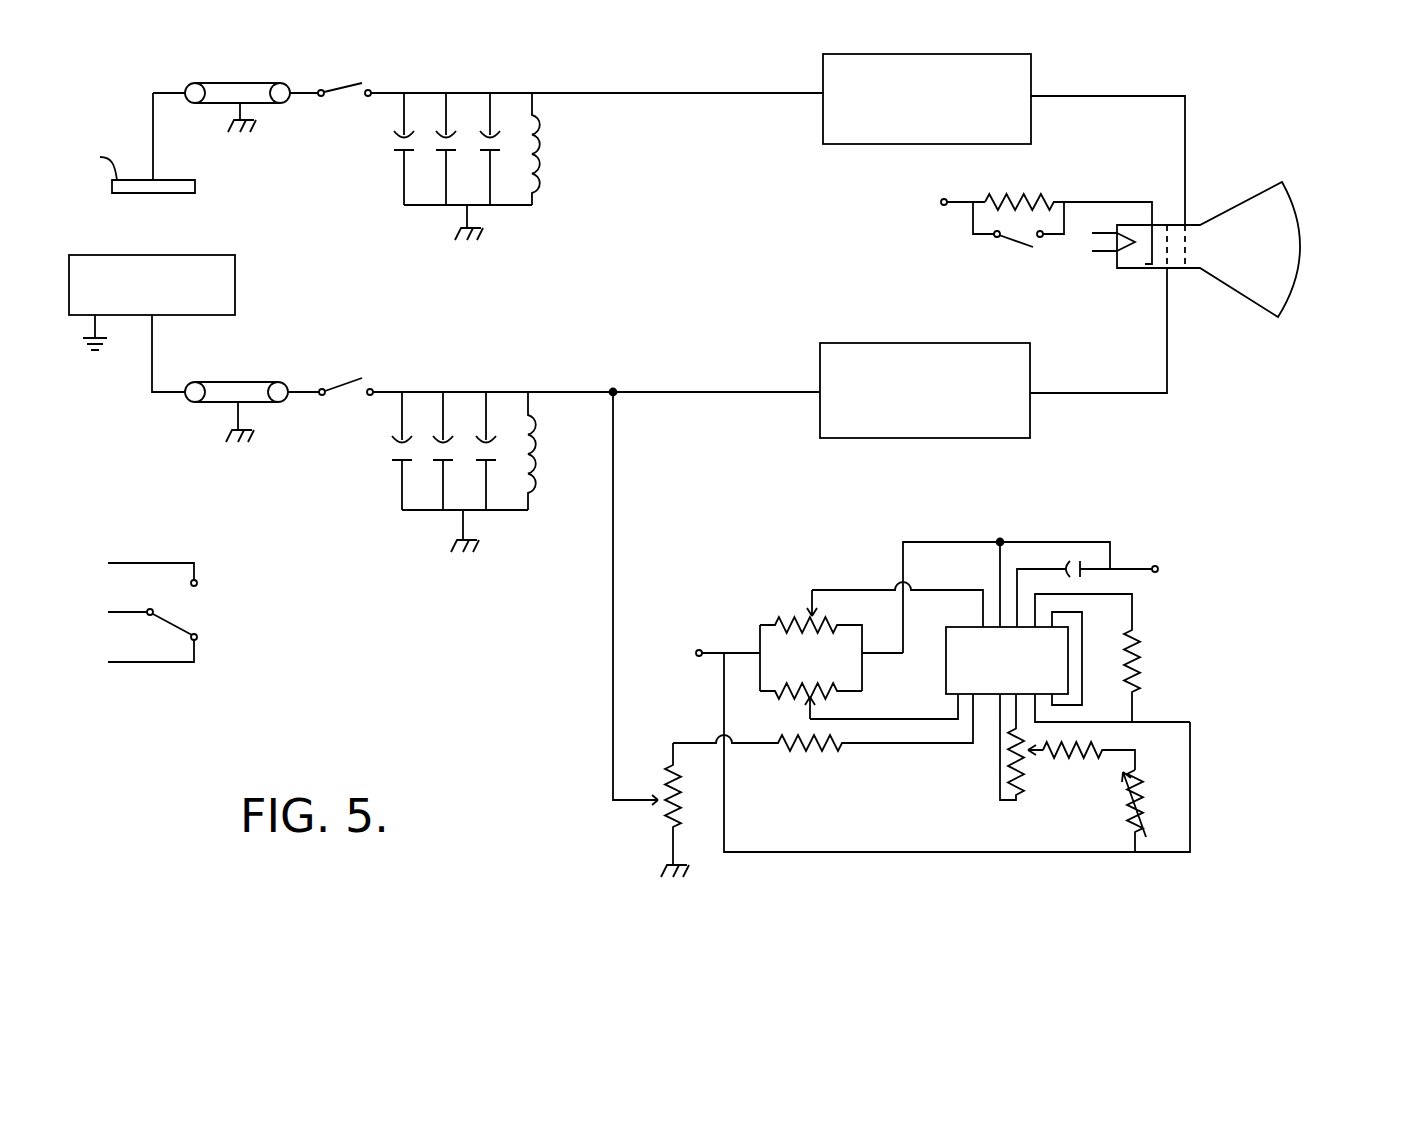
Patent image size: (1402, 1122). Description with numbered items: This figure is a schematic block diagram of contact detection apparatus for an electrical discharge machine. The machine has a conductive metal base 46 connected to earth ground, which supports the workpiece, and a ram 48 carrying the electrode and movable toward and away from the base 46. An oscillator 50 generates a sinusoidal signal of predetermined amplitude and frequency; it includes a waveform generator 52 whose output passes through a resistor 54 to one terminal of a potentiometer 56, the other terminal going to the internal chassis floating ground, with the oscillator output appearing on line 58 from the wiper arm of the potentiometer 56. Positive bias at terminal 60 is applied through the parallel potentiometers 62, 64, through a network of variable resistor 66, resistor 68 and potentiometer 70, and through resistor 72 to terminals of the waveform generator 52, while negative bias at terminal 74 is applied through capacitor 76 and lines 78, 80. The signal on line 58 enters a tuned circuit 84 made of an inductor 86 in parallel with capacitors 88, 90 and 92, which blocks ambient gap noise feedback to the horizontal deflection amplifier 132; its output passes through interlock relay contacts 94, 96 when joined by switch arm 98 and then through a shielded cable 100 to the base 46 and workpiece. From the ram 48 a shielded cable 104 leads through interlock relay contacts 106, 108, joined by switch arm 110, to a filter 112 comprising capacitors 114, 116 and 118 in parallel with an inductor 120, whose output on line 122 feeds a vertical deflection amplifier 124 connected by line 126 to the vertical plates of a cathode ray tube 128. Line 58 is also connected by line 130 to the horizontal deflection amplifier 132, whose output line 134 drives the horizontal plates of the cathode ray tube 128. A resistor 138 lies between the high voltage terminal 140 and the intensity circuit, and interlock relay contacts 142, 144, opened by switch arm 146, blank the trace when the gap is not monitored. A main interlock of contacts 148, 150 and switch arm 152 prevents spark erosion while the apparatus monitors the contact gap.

The base 46 is at (238, 281).
The ram 48 is at (198, 186).
The oscillator 50 is at (895, 689).
The waveform generator 52 is at (945, 683).
The resistor 54 is at (820, 748).
The potentiometer 56 is at (660, 822).
The line 58 is at (611, 630).
The terminal 60 is at (698, 650).
The potentiometer 62 is at (788, 606).
The potentiometer 64 is at (808, 682).
The variable resistor 66 is at (1130, 808).
The resistor 68 is at (1070, 755).
The potentiometer 70 is at (1028, 775).
The resistor 72 is at (1142, 664).
The terminal 74 is at (1160, 567).
The capacitor 76 is at (1086, 573).
The line 78 is at (996, 568).
The line 80 is at (950, 542).
The tuned circuit 84 is at (463, 493).
The inductor 86 is at (538, 455).
The capacitor 88 is at (488, 446).
The capacitor 90 is at (448, 462).
The capacitor 92 is at (400, 446).
The interlock relay contact 94 is at (372, 388).
The interlock relay contact 96 is at (321, 396).
The switch arm 98 is at (362, 378).
The shielded cable 100 is at (226, 381).
The shielded cable 104 is at (253, 82).
The interlock relay contact 106 is at (322, 88).
The interlock relay contact 108 is at (367, 89).
The switch arm 110 is at (343, 97).
The filter 112 is at (477, 157).
The capacitor 114 is at (402, 140).
The capacitor 116 is at (449, 133).
The capacitor 118 is at (492, 133).
The inductor 120 is at (541, 152).
The line 122 is at (668, 92).
The vertical deflection amplifier 124 is at (838, 146).
The line 126 is at (1147, 96).
The cathode ray tube 128 is at (1266, 184).
The line 130 is at (716, 391).
The horizontal deflection amplifier 132 is at (860, 343).
The line 134 is at (1116, 394).
The resistor 138 is at (1023, 198).
The high voltage terminal 140 is at (943, 206).
The interlock relay contact 142 is at (997, 238).
The interlock relay contact 144 is at (1040, 238).
The switch arm 146 is at (1018, 248).
The contact 148 is at (198, 583).
The contact 150 is at (200, 640).
The switch arm 152 is at (182, 622).